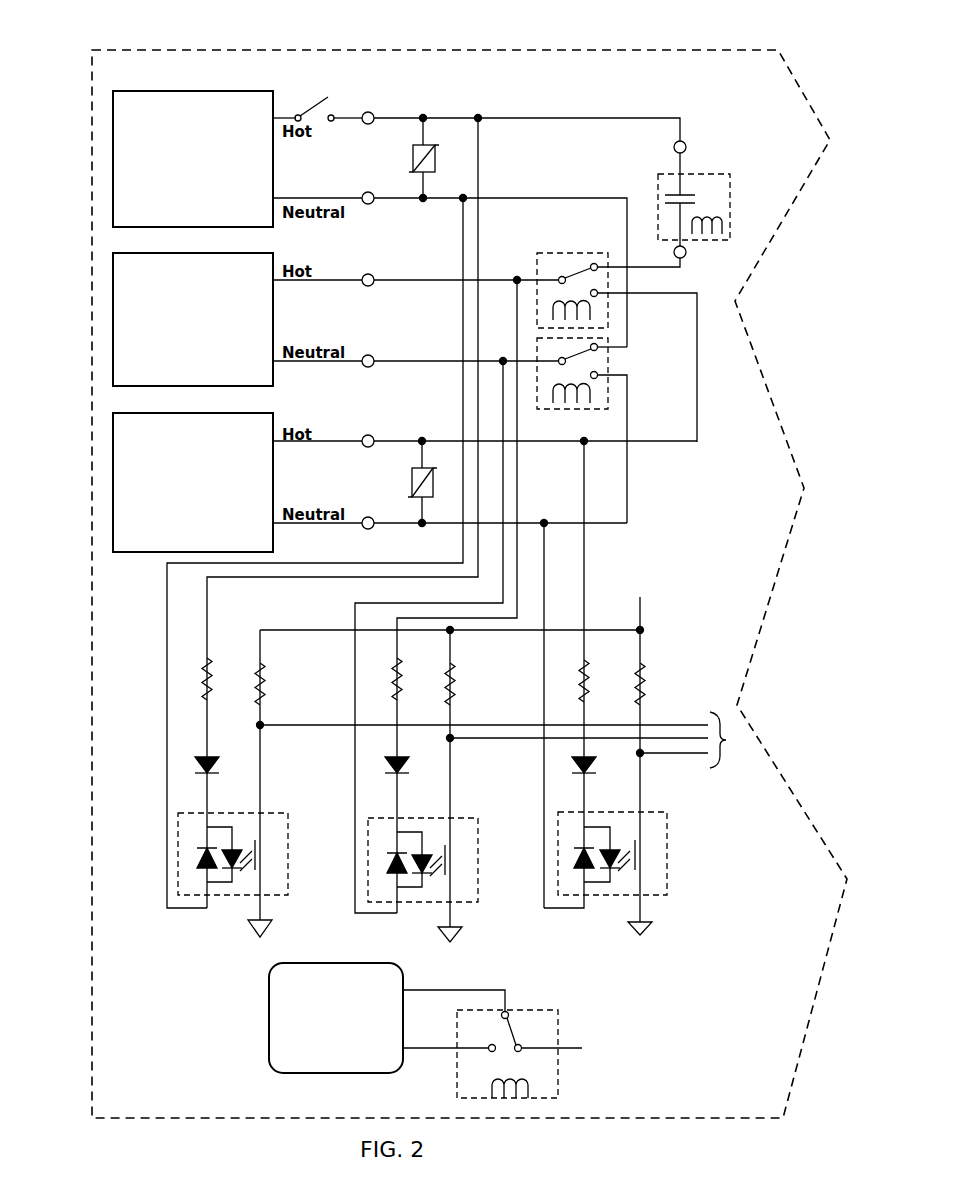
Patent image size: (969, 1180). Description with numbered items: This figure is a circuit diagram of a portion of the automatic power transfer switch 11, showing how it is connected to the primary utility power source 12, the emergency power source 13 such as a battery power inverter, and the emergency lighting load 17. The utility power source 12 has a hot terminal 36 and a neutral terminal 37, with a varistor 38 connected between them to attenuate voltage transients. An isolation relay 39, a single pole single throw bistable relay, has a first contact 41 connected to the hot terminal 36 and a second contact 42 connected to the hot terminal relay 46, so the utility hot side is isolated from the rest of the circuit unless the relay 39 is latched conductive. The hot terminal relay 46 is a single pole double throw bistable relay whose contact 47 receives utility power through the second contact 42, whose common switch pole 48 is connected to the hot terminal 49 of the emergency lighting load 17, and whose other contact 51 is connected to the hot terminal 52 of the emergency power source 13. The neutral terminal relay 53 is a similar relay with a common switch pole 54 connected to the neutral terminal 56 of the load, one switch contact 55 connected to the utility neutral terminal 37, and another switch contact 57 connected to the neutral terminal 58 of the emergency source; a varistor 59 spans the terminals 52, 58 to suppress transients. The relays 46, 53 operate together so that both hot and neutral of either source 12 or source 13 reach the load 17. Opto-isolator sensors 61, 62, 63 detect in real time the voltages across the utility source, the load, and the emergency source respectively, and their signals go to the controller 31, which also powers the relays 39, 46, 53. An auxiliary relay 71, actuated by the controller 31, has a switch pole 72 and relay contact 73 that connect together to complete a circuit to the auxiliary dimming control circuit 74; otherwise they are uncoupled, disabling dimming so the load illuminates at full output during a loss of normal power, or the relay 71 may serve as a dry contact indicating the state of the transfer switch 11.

The automatic power transfer switch 11 is at (567, 88).
The primary utility power source 12 is at (135, 150).
The emergency power source 13 is at (135, 515).
The emergency lighting load 17 is at (135, 312).
The controller 31 is at (535, 745).
The hot terminal 36 is at (370, 110).
The neutral terminal 37 is at (370, 205).
The varistor 38 is at (412, 161).
The isolation relay 39 is at (700, 176).
The first contact 41 is at (673, 143).
The second contact 42 is at (685, 257).
The hot terminal relay 46 is at (556, 256).
The contact 47 is at (597, 262).
The common switch pole 48 is at (558, 278).
The hot terminal 49 is at (372, 273).
The other contact 51 is at (598, 297).
The hot terminal 52 is at (364, 434).
The neutral terminal relay 53 is at (608, 412).
The common switch pole 54 is at (558, 358).
The switch contact 55 is at (600, 352).
The neutral terminal 56 is at (373, 354).
The switch contact 57 is at (600, 378).
The neutral terminal 58 is at (365, 515).
The varistor 59 is at (411, 484).
The opto-isolator sensor 61 is at (268, 812).
The opto-isolator sensor 62 is at (462, 818).
The opto-isolator sensor 63 is at (668, 882).
The auxiliary relay 71 is at (560, 1040).
The switch pole 72 is at (510, 1012).
The relay contact 73 is at (490, 1016).
The auxiliary dimming control circuit 74 is at (268, 1048).